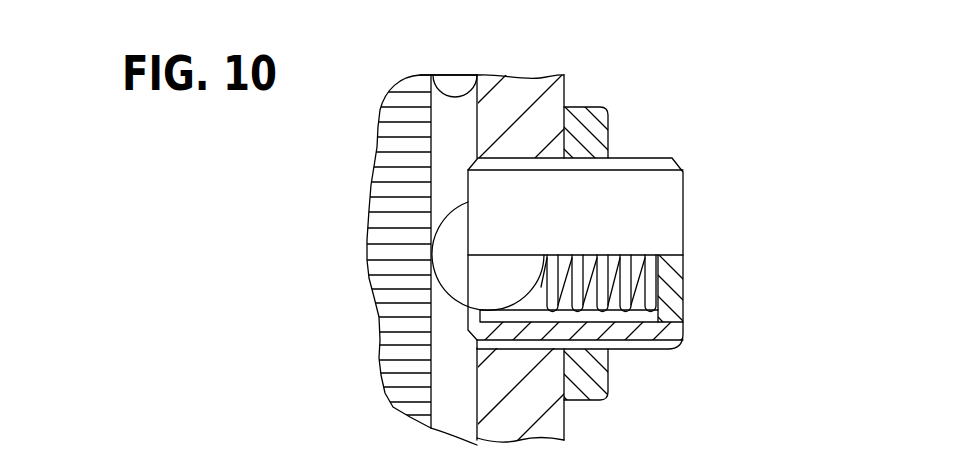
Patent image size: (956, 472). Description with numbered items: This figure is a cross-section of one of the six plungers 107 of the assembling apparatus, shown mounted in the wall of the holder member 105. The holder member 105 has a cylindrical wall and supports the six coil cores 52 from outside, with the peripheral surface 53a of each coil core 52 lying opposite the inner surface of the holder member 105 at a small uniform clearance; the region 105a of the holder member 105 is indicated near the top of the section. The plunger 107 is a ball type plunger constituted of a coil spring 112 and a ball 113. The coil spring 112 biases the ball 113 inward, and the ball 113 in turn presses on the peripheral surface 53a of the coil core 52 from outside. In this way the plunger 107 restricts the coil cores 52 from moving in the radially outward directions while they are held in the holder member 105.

The coil core 52 is at (373, 157).
The peripheral surface 53a is at (453, 73).
The holder member 105 is at (527, 415).
The surface of attachment plate 105a is at (467, 73).
The plunger 107 is at (660, 155).
The coil spring 112 is at (655, 294).
The ball 113 is at (453, 275).